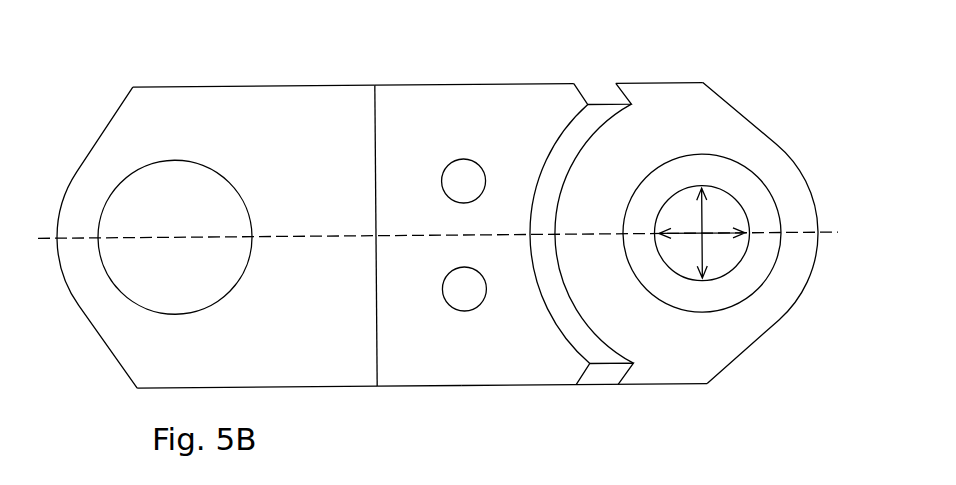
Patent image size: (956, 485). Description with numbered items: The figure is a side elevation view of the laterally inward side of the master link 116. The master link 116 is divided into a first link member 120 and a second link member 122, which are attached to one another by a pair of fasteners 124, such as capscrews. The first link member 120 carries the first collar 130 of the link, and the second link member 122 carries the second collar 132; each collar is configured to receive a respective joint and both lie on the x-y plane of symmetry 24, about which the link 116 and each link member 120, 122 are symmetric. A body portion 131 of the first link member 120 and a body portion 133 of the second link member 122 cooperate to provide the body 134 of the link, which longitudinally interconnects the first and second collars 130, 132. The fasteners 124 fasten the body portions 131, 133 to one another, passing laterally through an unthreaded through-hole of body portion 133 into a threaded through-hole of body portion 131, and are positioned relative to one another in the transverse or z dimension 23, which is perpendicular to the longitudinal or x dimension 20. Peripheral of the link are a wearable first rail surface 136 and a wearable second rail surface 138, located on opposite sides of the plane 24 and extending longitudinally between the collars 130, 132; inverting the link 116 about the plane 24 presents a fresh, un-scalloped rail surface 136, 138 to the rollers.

The master link 116 is at (133, 48).
The first link member 120 is at (522, 97).
The second link member 122 is at (253, 105).
The fasteners 124 is at (453, 285).
The first collar 130 is at (765, 146).
The body portion of the first link member 131 is at (425, 373).
The second collar 132 is at (97, 158).
The body portion of the second link member 133 is at (332, 373).
The body 134 is at (420, 430).
The first rail surface 136 is at (465, 84).
The second rail surface 138 is at (522, 386).
The longitudinal dimension 20 is at (688, 232).
The transverse dimension 23 is at (700, 248).
The x-y plane of symmetry 24 is at (763, 232).